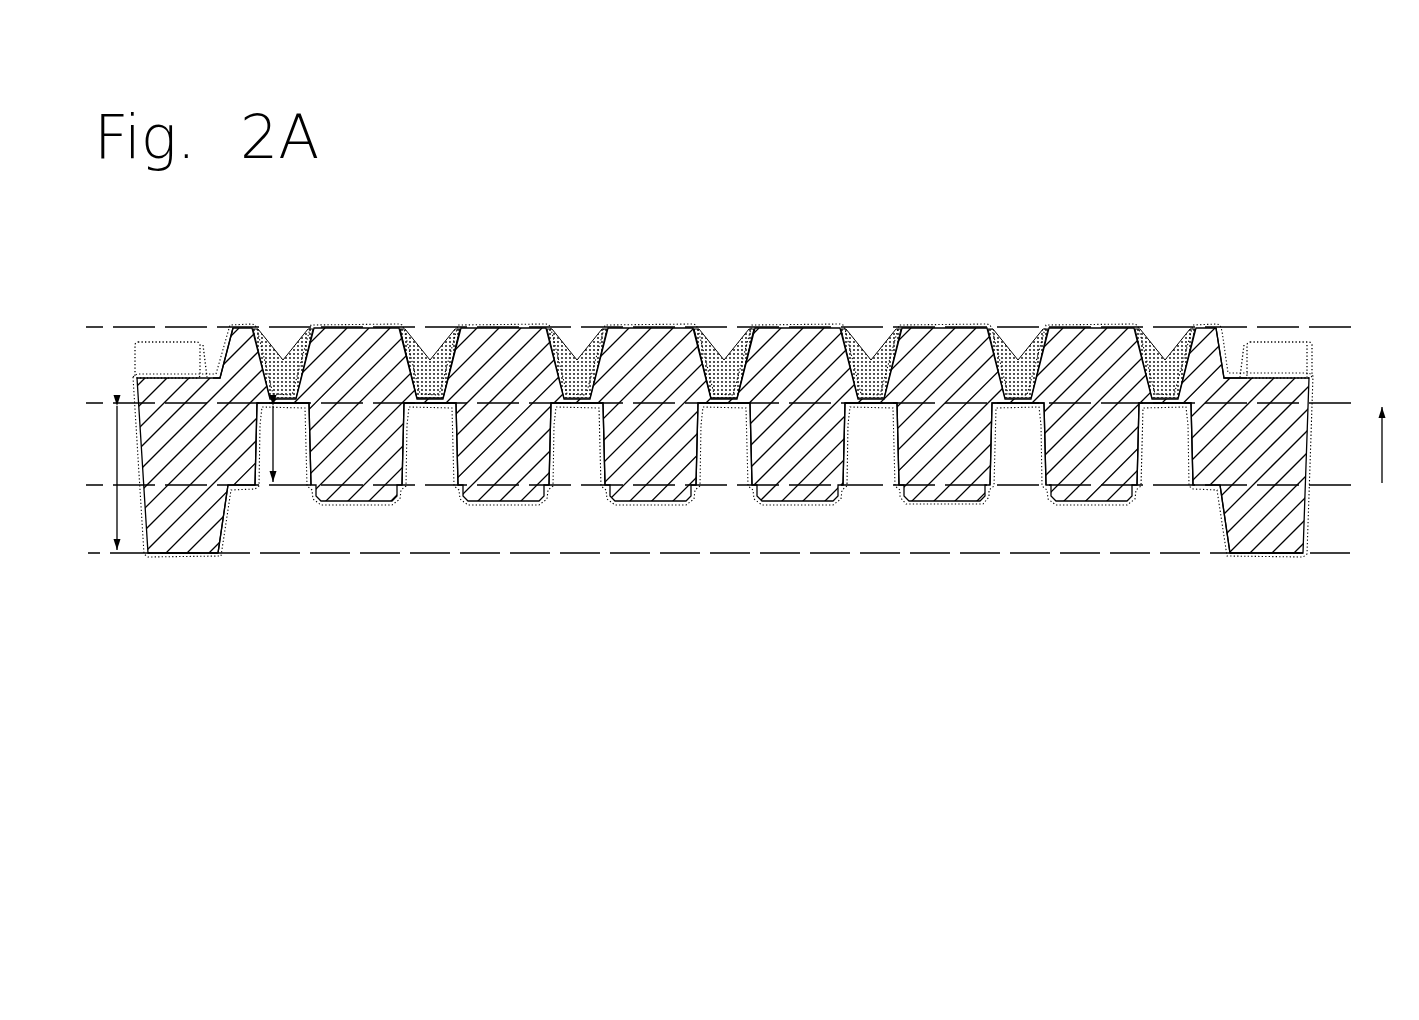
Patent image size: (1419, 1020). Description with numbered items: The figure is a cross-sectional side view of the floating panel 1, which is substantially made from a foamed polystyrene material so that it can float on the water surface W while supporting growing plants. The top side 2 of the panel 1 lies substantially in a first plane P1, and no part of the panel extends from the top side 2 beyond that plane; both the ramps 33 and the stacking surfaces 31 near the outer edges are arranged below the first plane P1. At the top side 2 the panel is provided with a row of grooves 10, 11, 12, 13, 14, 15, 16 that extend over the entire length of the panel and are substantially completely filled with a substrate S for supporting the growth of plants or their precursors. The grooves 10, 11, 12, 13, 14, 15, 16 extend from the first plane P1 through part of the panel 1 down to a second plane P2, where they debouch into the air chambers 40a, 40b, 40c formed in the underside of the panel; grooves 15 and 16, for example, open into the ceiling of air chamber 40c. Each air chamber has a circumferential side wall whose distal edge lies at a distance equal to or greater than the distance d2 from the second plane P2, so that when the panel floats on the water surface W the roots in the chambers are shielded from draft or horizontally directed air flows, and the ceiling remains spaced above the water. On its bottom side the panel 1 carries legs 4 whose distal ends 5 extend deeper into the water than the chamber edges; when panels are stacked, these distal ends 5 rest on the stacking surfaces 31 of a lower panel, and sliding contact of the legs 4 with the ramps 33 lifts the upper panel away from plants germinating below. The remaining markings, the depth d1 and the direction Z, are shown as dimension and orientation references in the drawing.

The panel 1 is at (1170, 240).
The top side 2 is at (952, 327).
The legs 4 is at (225, 523).
The distal ends 5 is at (178, 553).
The groove 10 is at (1148, 343).
The groove 11 is at (995, 343).
The groove 12 is at (843, 343).
The groove 13 is at (697, 343).
The groove 14 is at (557, 345).
The groove 15 is at (407, 345).
The groove 16 is at (299, 348).
The stacking surfaces 31 is at (213, 377).
The ramps 33 is at (168, 355).
The air chamber 40a is at (1018, 491).
The air chamber 40b is at (583, 498).
The air chamber 40c is at (422, 491).
The substrate S is at (443, 352).
The first plane P1 is at (704, 326).
The second plane P2 is at (704, 402).
The water surface W is at (706, 485).
The depth d1 is at (98, 478).
The distance d2 is at (289, 444).
The Z direction Z is at (1379, 460).